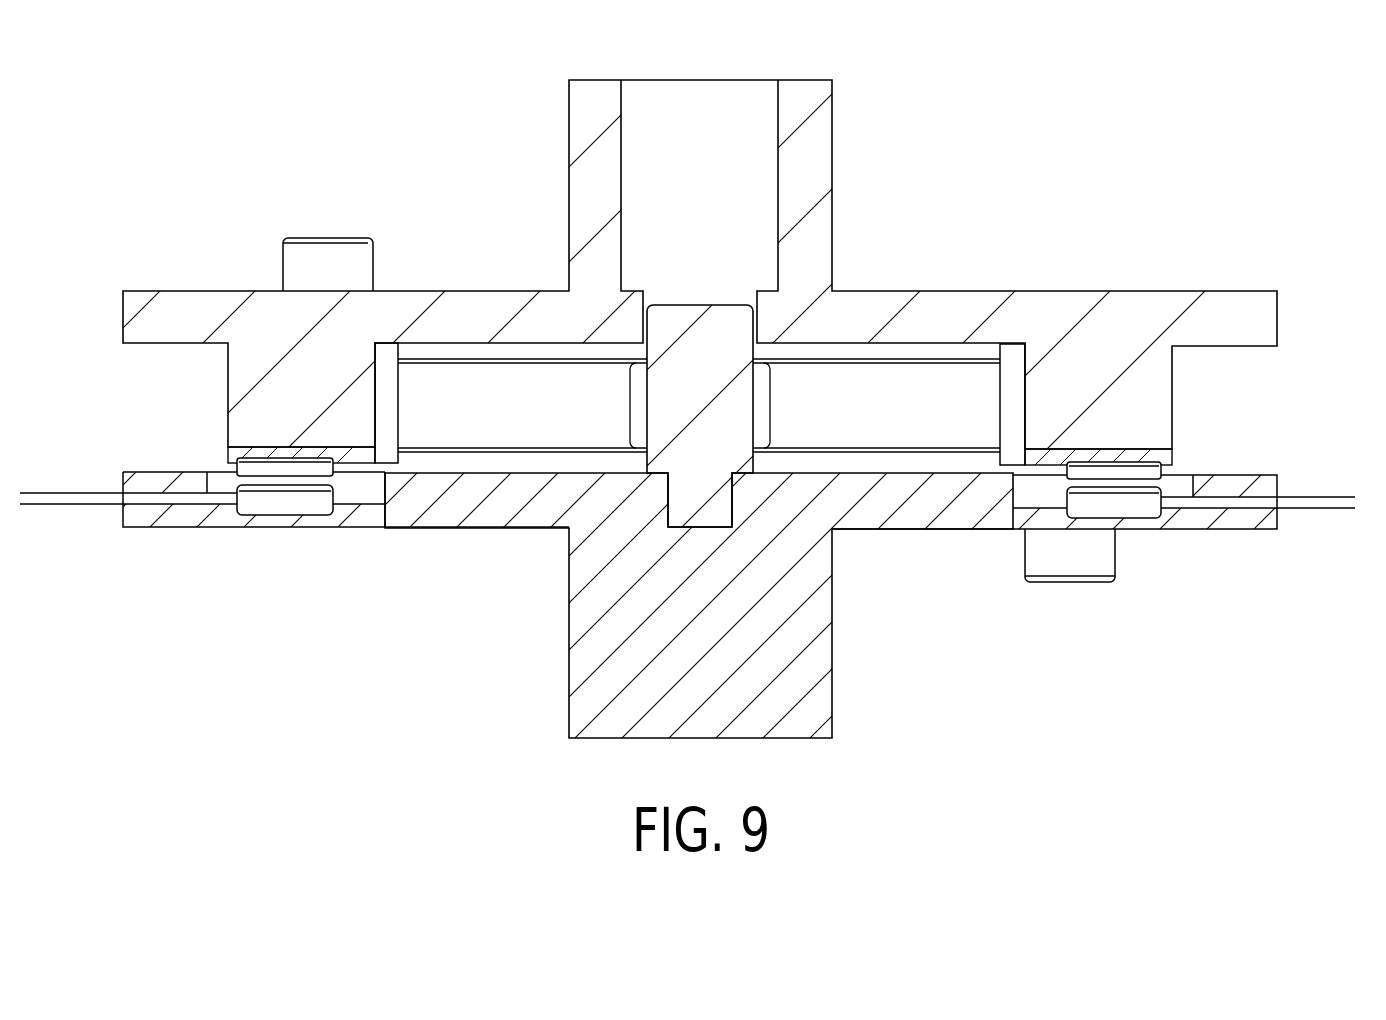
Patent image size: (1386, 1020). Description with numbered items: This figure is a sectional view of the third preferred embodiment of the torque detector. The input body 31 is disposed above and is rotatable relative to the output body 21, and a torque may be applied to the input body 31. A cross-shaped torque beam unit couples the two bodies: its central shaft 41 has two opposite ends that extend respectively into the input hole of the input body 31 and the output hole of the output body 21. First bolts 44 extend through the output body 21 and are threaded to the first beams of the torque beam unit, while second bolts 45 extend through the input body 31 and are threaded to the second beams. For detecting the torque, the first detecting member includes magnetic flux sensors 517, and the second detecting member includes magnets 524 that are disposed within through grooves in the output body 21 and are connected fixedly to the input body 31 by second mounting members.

The output body 21 is at (958, 518).
The input body 31 is at (938, 312).
The shaft 41 is at (683, 320).
The first bolt 44 is at (1077, 558).
The second bolt 45 is at (331, 260).
The magnetic flux sensor 517 is at (283, 505).
The magnet 524 is at (248, 468).